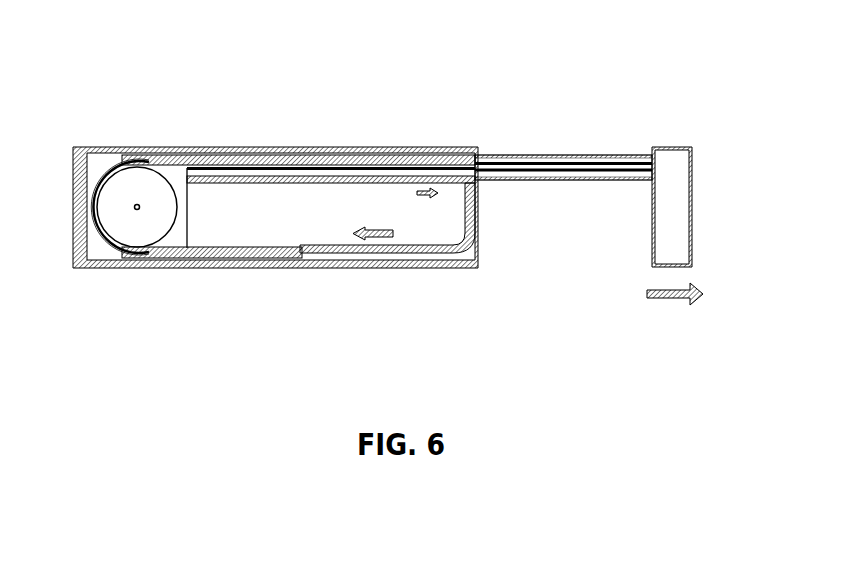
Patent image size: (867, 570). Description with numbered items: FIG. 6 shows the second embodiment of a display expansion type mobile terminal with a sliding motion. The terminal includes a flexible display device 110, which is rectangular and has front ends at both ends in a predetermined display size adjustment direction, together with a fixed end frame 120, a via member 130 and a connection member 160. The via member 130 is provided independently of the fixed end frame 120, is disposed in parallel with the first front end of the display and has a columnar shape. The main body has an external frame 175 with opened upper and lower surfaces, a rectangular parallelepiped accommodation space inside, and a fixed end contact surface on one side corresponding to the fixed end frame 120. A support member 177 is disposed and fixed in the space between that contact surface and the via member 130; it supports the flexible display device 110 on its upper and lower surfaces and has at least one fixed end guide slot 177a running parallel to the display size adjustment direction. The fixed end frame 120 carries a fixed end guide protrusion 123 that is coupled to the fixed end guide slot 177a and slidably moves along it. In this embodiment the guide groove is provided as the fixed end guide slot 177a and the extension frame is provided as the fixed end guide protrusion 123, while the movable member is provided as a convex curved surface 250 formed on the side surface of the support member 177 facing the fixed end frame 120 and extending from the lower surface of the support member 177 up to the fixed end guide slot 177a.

The flexible display device 110 is at (148, 152).
The fixed end frame 120 is at (672, 168).
The fixed end guide protrusion 123 is at (455, 160).
The via member 130 is at (140, 223).
The connection member 160 is at (378, 245).
The external frame 175 is at (84, 150).
The support member 177 is at (238, 227).
The fixed end guide slot 177a is at (245, 175).
The convex curved surface 250 is at (478, 228).